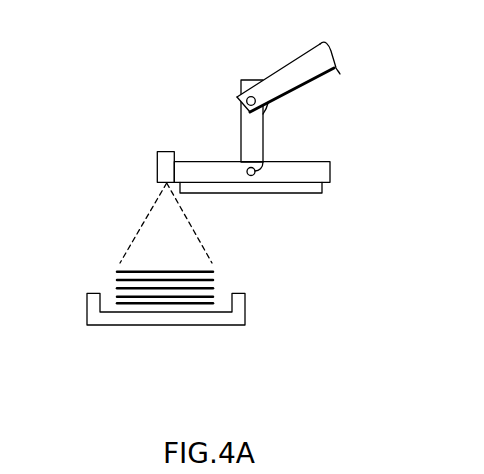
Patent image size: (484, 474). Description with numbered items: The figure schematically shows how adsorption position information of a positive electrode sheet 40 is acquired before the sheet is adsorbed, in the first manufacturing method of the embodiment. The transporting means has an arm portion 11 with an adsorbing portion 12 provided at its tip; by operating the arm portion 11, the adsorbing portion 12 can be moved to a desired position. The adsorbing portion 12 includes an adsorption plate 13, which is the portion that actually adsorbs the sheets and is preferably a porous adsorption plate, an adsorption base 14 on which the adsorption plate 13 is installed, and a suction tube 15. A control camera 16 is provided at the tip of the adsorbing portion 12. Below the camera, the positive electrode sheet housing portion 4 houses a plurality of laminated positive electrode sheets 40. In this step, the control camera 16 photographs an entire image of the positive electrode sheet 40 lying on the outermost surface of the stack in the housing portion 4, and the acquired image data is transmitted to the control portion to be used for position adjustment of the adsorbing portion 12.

The positive electrode sheet housing portion 4 is at (218, 325).
The arm portion 11 is at (295, 62).
The adsorbing portion 12 is at (261, 186).
The adsorption plate 13 is at (298, 192).
The adsorption base 14 is at (330, 172).
The suction tube 15 is at (257, 175).
The control camera 16 is at (165, 152).
The positive electrode sheet 40 is at (123, 270).